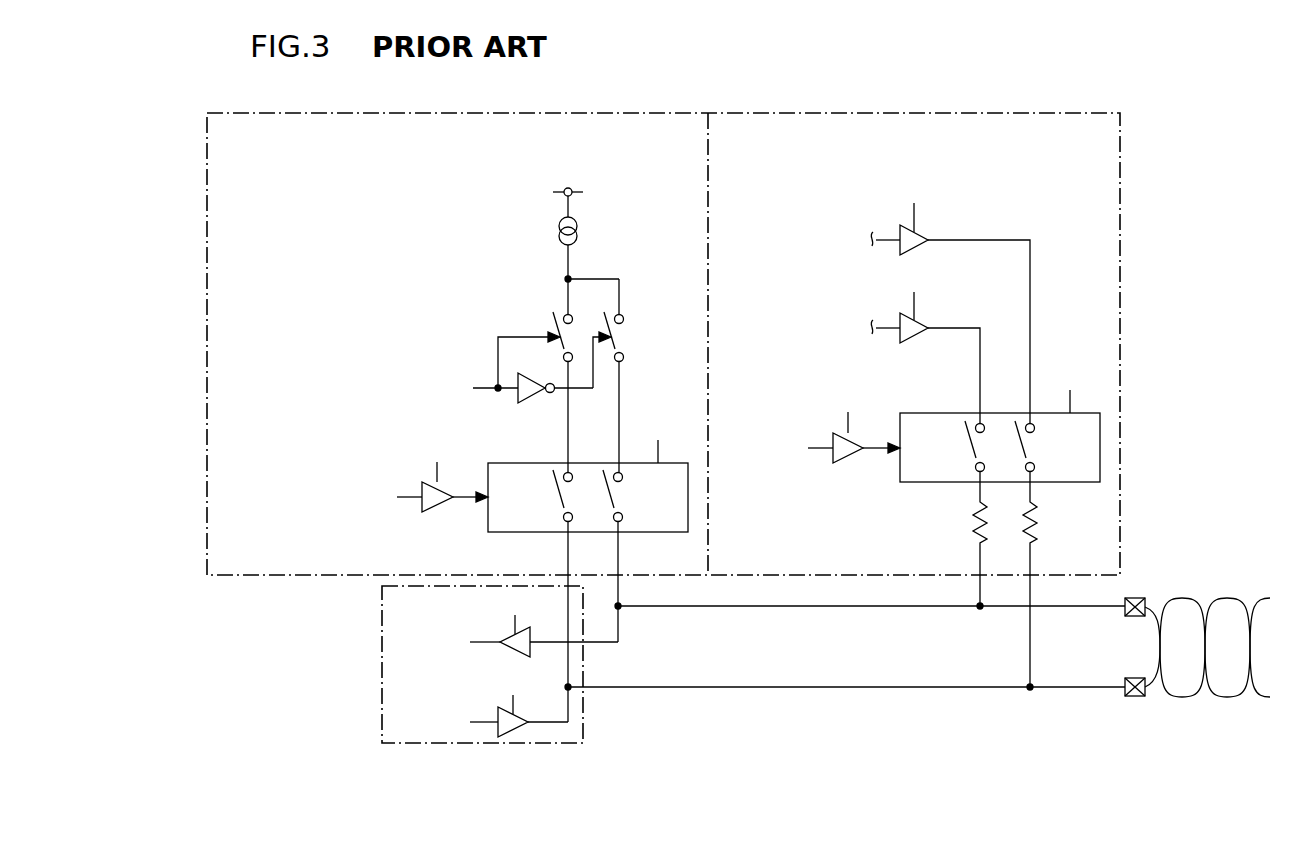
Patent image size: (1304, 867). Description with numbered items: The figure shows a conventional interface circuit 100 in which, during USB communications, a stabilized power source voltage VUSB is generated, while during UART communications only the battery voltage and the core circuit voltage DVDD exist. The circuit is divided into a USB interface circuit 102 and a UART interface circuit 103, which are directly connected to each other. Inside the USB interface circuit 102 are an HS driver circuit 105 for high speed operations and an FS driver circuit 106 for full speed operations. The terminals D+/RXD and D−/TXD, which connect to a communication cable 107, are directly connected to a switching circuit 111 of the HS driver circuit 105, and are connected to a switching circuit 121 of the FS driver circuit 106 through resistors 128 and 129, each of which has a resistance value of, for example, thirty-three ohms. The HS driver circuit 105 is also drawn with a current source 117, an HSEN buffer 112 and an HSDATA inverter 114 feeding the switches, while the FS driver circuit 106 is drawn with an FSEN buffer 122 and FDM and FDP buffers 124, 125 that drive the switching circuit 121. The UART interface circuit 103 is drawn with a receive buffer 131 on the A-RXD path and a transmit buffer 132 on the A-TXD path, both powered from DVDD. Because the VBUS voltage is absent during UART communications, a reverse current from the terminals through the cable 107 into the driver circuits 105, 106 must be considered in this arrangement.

The interface circuit 100 is at (950, 50).
The USB interface circuit 102 is at (888, 104).
The UART interface circuit 103 is at (370, 690).
The HS driver circuit 105 is at (643, 123).
The FS driver circuit 106 is at (1033, 123).
The communication cable 107 is at (1230, 592).
The switching circuit 111 is at (472, 521).
The HSEN buffer 112 is at (420, 488).
The HSDATA inverter 114 is at (535, 403).
The current source 117 is at (590, 231).
The switching circuit 121 is at (906, 493).
The FSEN buffer 122 is at (848, 463).
The FDM buffer 124 is at (898, 231).
The FDP buffer 125 is at (913, 343).
The resistor 128 is at (958, 538).
The resistor 129 is at (1049, 579).
The A-RXD receive buffer 131 is at (504, 651).
The A-TXD transmit buffer 132 is at (497, 714).